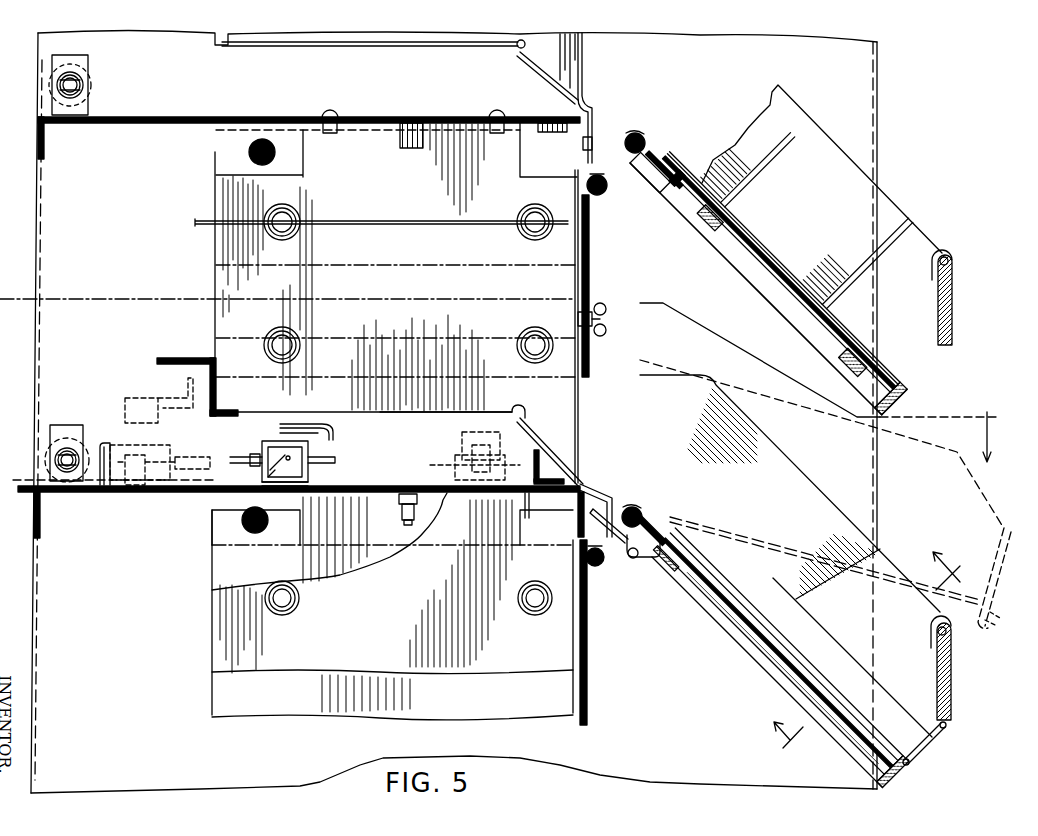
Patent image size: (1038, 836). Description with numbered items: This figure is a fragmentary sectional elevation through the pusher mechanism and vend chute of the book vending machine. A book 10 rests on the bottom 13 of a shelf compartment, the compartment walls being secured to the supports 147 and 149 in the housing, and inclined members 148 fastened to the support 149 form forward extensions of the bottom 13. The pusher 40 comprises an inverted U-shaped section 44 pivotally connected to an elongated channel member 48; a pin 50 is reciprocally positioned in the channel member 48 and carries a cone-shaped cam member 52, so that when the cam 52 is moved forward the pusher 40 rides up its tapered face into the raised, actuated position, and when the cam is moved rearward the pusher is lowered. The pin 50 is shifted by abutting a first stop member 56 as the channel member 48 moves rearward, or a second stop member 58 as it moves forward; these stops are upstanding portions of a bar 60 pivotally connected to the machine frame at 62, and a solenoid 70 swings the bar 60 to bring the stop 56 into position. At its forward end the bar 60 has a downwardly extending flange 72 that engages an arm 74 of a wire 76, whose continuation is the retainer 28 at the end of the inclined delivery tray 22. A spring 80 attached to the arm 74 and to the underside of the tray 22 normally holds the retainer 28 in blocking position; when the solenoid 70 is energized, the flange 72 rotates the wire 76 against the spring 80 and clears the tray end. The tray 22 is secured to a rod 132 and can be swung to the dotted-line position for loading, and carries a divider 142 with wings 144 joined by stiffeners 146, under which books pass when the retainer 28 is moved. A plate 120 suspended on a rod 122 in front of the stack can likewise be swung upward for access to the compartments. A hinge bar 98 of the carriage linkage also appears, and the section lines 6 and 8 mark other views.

The hinge bar 98 is at (254, 144).
The book 10 is at (207, 280).
The support 147 is at (191, 357).
The pusher 40 is at (144, 397).
The first stop member 56 is at (102, 444).
The solenoid 70 is at (44, 462).
The channel member 48 is at (258, 479).
The inverted U-shaped section 44 is at (263, 449).
The cone-shaped cam member 52 is at (285, 473).
The pin 50 is at (232, 458).
The bottom portion 13 is at (414, 420).
The bar 60 is at (432, 487).
The pivotal connection 62 is at (418, 520).
The inclined member 148 is at (542, 448).
The second stop member 58 is at (550, 467).
The support 149 is at (528, 518).
The downwardly extending flange 72 is at (607, 488).
The arm 74 is at (607, 521).
The spring 80 is at (606, 566).
The plate 120 is at (592, 240).
The rod 122 is at (606, 196).
The inclined delivery tray 22 is at (724, 252).
The rod 132 is at (704, 512).
The wire 76 is at (746, 641).
The divider 142 is at (890, 210).
The wing 144 is at (954, 300).
The stiffener 146 is at (950, 257).
The retainer 28 is at (1003, 570).
The section line 6 is at (986, 429).
The section line 8 is at (875, 660).